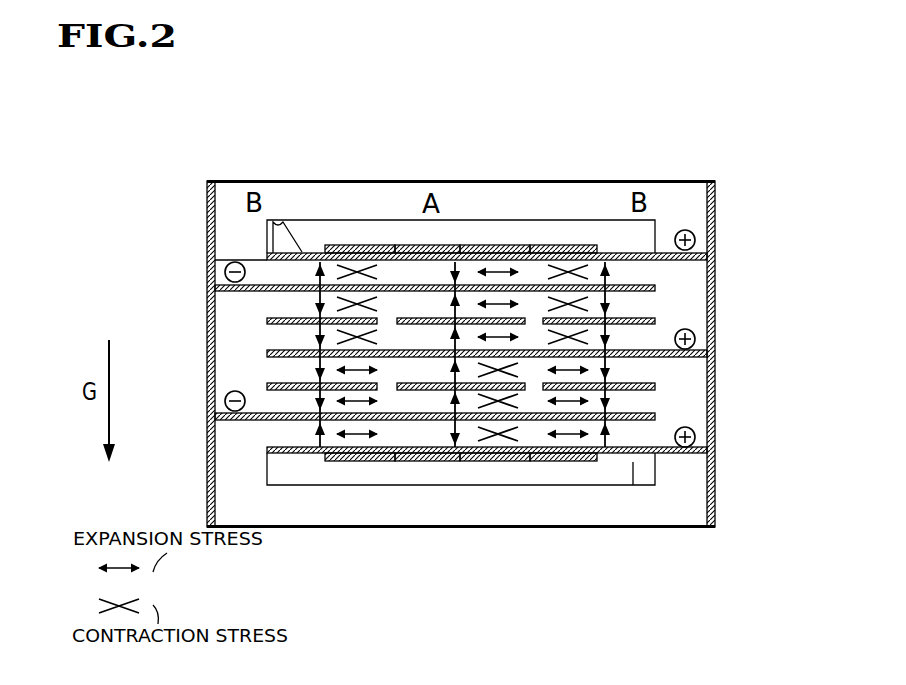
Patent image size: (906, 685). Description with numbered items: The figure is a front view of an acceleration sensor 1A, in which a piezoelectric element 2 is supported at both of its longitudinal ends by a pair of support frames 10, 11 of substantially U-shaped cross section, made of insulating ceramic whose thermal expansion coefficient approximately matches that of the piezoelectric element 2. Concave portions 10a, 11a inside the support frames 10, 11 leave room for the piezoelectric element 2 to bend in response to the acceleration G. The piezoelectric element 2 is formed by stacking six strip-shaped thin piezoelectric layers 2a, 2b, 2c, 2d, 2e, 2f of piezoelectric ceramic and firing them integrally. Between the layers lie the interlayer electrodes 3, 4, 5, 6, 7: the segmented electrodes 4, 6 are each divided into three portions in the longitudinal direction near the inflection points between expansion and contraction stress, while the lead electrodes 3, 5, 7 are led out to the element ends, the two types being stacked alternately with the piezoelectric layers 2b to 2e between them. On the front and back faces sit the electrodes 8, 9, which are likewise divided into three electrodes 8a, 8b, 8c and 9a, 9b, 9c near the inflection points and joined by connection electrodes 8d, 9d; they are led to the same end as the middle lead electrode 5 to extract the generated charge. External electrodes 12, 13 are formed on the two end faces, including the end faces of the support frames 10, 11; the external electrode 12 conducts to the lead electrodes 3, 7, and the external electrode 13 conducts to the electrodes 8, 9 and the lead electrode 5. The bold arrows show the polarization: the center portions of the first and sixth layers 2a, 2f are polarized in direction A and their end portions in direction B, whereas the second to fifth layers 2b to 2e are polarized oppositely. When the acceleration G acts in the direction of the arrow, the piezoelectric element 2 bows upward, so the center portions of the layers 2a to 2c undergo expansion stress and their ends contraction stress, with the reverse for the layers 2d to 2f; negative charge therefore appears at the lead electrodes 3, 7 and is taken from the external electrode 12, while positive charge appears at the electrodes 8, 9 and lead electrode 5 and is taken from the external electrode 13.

The acceleration sensor 1A is at (457, 315).
The piezoelectric element 2 is at (483, 337).
The piezoelectric layer 2a is at (653, 275).
The piezoelectric layer 2b is at (650, 305).
The piezoelectric layer 2c is at (653, 337).
The piezoelectric layer 2d is at (650, 372).
The piezoelectric layer 2e is at (650, 405).
The piezoelectric layer 2f is at (520, 435).
The lead electrode 3 is at (267, 283).
The segmented electrode 4 is at (267, 322).
The lead electrode 5 is at (267, 353).
The segmented electrode 6 is at (267, 386).
The lead electrode 7 is at (243, 417).
The front face electrode 8 is at (455, 173).
The electrode 8a is at (457, 247).
The electrode 8b is at (305, 253).
The electrode 8c is at (565, 197).
The connection electrode 8d is at (389, 247).
The back face electrode 9 is at (458, 536).
The electrode 9a is at (457, 460).
The electrode 9b is at (312, 450).
The electrode 9c is at (567, 513).
The connection electrode 9d is at (387, 460).
The support frame 10 is at (436, 190).
The concave portion 10a is at (275, 220).
The support frame 11 is at (518, 523).
The concave portion 11a is at (633, 485).
The external electrode 12 is at (207, 205).
The external electrode 13 is at (716, 203).